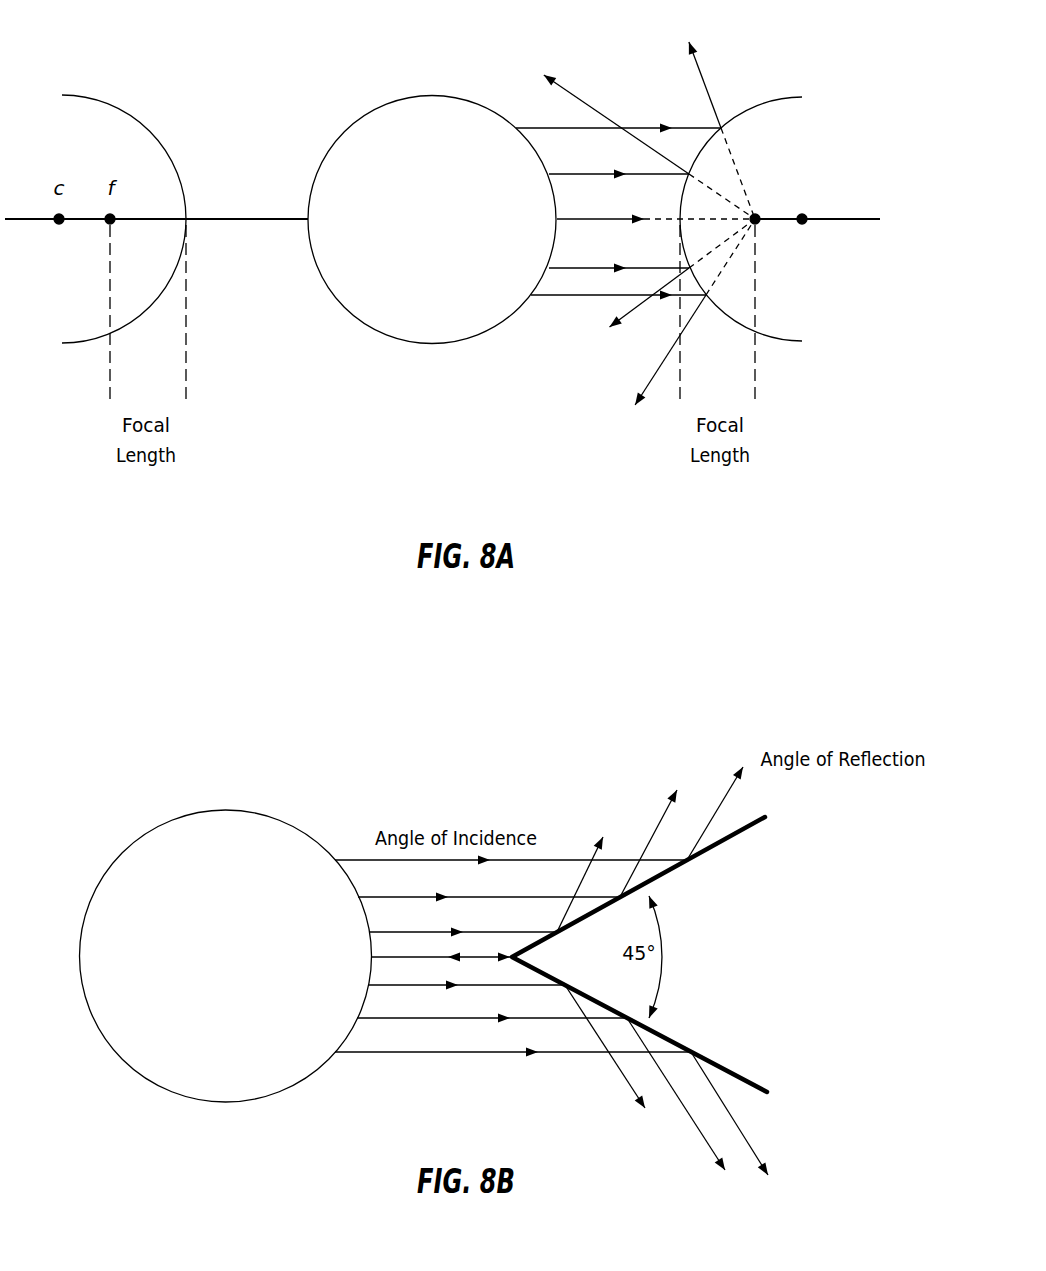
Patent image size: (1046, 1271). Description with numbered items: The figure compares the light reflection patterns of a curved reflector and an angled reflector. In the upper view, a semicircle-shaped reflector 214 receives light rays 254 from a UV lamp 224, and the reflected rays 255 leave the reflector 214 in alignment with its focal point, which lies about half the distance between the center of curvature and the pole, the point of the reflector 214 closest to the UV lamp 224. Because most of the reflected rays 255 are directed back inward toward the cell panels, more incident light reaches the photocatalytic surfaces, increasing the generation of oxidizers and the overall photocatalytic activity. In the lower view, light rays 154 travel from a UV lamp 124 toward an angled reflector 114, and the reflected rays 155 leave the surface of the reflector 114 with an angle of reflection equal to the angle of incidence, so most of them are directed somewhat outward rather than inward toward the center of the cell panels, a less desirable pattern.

In FIG. 8A, the UV lamp 224 is at (353, 147).
In FIG. 8A, the light rays 254 is at (577, 297).
In FIG. 8A, the reflected rays 255 is at (597, 110).
In FIG. 8A, the reflector 214 is at (758, 102).
In FIG. 8B, the UV lamp 124 is at (222, 836).
In FIG. 8B, the light rays 154 is at (565, 1053).
In FIG. 8B, the reflected rays 155 is at (667, 808).
In FIG. 8B, the angled reflector 114 is at (728, 840).